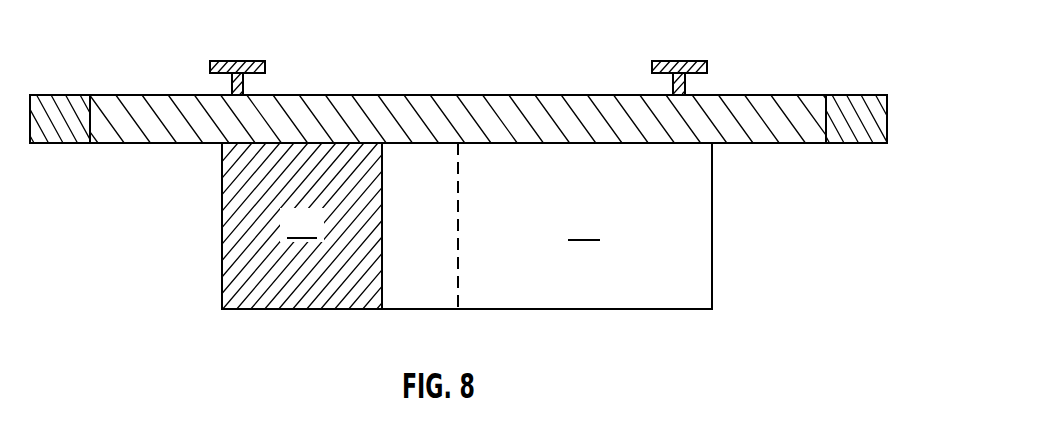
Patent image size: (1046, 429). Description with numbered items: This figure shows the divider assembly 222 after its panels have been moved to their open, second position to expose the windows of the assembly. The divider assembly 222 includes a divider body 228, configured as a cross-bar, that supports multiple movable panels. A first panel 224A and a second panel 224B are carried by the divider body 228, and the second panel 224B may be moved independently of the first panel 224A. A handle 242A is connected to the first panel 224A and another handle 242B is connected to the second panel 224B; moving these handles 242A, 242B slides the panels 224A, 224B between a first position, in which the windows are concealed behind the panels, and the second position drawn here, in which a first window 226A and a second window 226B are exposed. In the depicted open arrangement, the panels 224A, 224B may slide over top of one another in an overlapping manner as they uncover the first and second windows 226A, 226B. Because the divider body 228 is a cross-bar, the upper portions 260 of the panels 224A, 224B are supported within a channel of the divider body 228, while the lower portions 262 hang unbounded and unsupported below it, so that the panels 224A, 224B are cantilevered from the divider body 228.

The divider assembly 222 is at (820, 35).
The first panel 224A is at (262, 295).
The second panel 224B is at (612, 293).
The first window 226A is at (155, 238).
The second window 226B is at (832, 238).
The divider body 228 is at (422, 125).
The handle 242A is at (232, 61).
The handle 242B is at (690, 60).
The upper portions 260 is at (288, 155).
The lower portions 262 is at (343, 295).